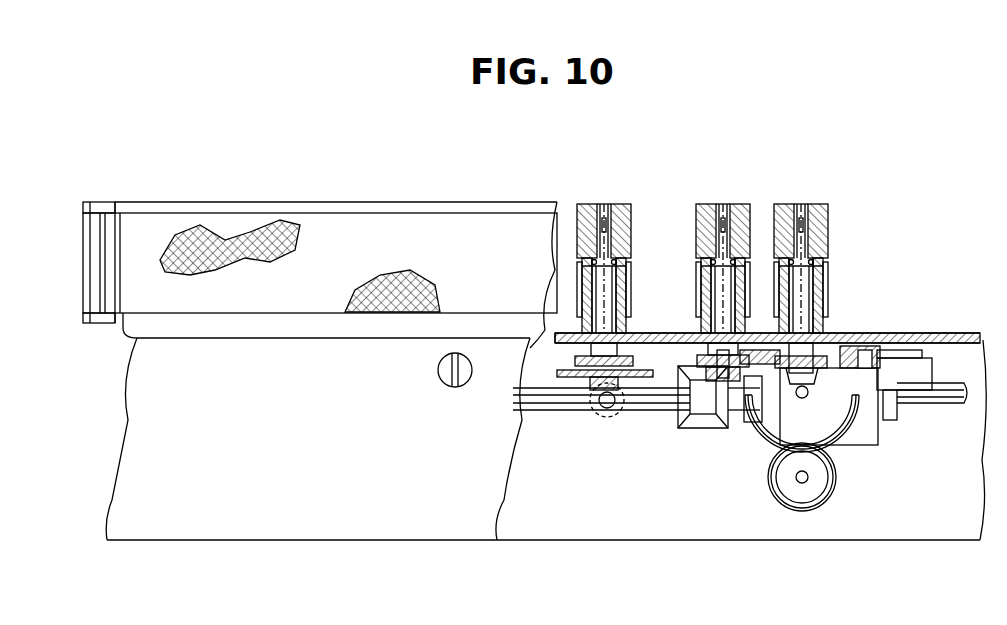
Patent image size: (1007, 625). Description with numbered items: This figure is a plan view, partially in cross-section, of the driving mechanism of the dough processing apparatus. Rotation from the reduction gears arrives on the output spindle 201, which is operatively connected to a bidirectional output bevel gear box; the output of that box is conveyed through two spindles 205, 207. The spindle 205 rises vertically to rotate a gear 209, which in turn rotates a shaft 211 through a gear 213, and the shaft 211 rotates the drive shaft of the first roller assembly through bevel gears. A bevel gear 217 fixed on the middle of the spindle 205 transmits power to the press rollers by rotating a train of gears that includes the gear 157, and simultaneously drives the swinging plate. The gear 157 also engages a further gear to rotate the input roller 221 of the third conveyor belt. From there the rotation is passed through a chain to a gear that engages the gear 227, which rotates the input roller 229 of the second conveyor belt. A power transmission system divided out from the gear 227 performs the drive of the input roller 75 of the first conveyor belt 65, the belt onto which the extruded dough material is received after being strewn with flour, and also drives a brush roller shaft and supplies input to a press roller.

The first conveyor belt 65 is at (376, 228).
The input roller 75 is at (625, 210).
The input roller 229 is at (708, 212).
The input roller 221 is at (783, 212).
The gear 227 is at (700, 352).
The output spindle 201 is at (542, 398).
The bevel gear 217 is at (787, 394).
The spindle 205 is at (795, 402).
The gear 157 is at (812, 392).
The gear 209 is at (818, 434).
The shaft 211 is at (796, 474).
The gear 213 is at (826, 500).
The spindle 207 is at (940, 392).